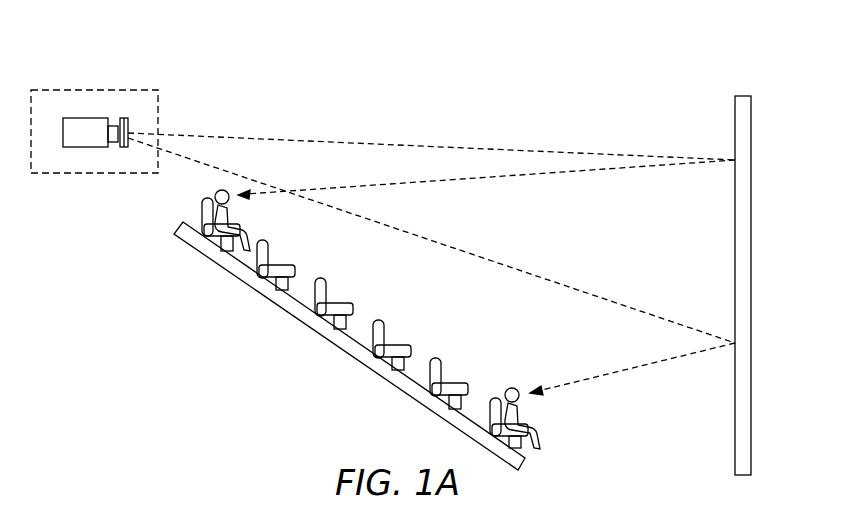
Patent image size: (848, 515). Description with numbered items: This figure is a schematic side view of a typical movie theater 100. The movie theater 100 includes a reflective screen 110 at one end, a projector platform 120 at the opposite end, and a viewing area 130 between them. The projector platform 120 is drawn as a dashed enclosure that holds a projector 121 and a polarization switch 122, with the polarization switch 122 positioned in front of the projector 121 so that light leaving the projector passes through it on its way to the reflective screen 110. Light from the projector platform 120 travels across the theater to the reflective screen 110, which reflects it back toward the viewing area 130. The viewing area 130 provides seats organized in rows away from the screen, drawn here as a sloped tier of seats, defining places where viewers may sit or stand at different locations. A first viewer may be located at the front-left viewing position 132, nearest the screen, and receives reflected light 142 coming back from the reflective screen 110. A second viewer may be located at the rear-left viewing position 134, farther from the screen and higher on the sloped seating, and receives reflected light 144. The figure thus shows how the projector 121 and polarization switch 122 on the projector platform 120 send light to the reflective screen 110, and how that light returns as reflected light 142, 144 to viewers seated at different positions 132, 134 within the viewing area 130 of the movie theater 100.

The movie theater 100 is at (558, 67).
The reflective screen 110 is at (735, 131).
The projector platform 120 is at (76, 174).
The projector 121 is at (85, 118).
The polarization switch 122 is at (130, 122).
The viewing area 130 is at (361, 360).
The front-left viewing position 132 is at (538, 432).
The rear-left viewing position 134 is at (245, 232).
The reflected light 142 is at (505, 264).
The reflected light 144 is at (445, 147).